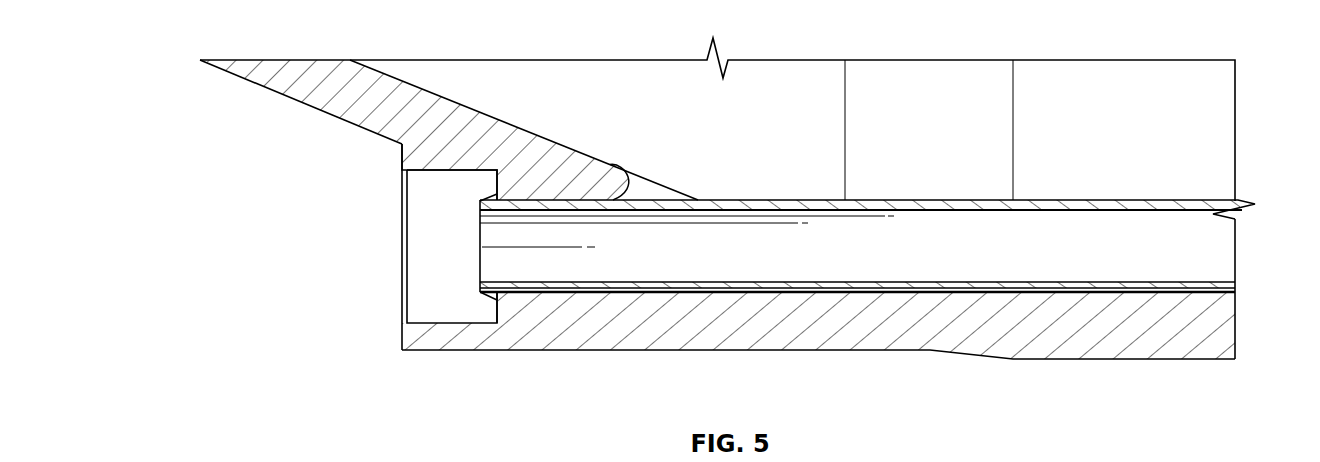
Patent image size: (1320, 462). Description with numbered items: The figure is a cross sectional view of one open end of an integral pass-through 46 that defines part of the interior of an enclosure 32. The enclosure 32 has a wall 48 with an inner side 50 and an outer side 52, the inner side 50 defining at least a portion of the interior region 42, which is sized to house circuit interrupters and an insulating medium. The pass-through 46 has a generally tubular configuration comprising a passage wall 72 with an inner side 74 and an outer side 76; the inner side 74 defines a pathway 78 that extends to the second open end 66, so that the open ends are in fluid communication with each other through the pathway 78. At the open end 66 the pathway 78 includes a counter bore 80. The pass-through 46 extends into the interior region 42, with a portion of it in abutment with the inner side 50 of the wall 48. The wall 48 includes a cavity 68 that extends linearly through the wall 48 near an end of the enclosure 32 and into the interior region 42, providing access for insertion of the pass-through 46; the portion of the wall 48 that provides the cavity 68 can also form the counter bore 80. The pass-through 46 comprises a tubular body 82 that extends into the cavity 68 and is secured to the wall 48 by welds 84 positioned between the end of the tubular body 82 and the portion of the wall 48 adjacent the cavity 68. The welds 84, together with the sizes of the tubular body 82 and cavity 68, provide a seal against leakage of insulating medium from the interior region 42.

The enclosure 32 is at (1225, 331).
The interior region 42 is at (1223, 137).
The pass-through 46 is at (1225, 252).
The wall 48 is at (308, 73).
The inner side 50 is at (412, 82).
The outer side 52 is at (290, 96).
The second open end 66 is at (402, 303).
The cavity 68 is at (533, 192).
The passage wall 72 is at (588, 287).
The inner side 74 is at (995, 212).
The outer side 76 is at (902, 200).
The pathway 78 is at (888, 213).
The counter bore 80 is at (437, 256).
The tubular body 82 is at (1113, 200).
The weld 84 is at (492, 195).